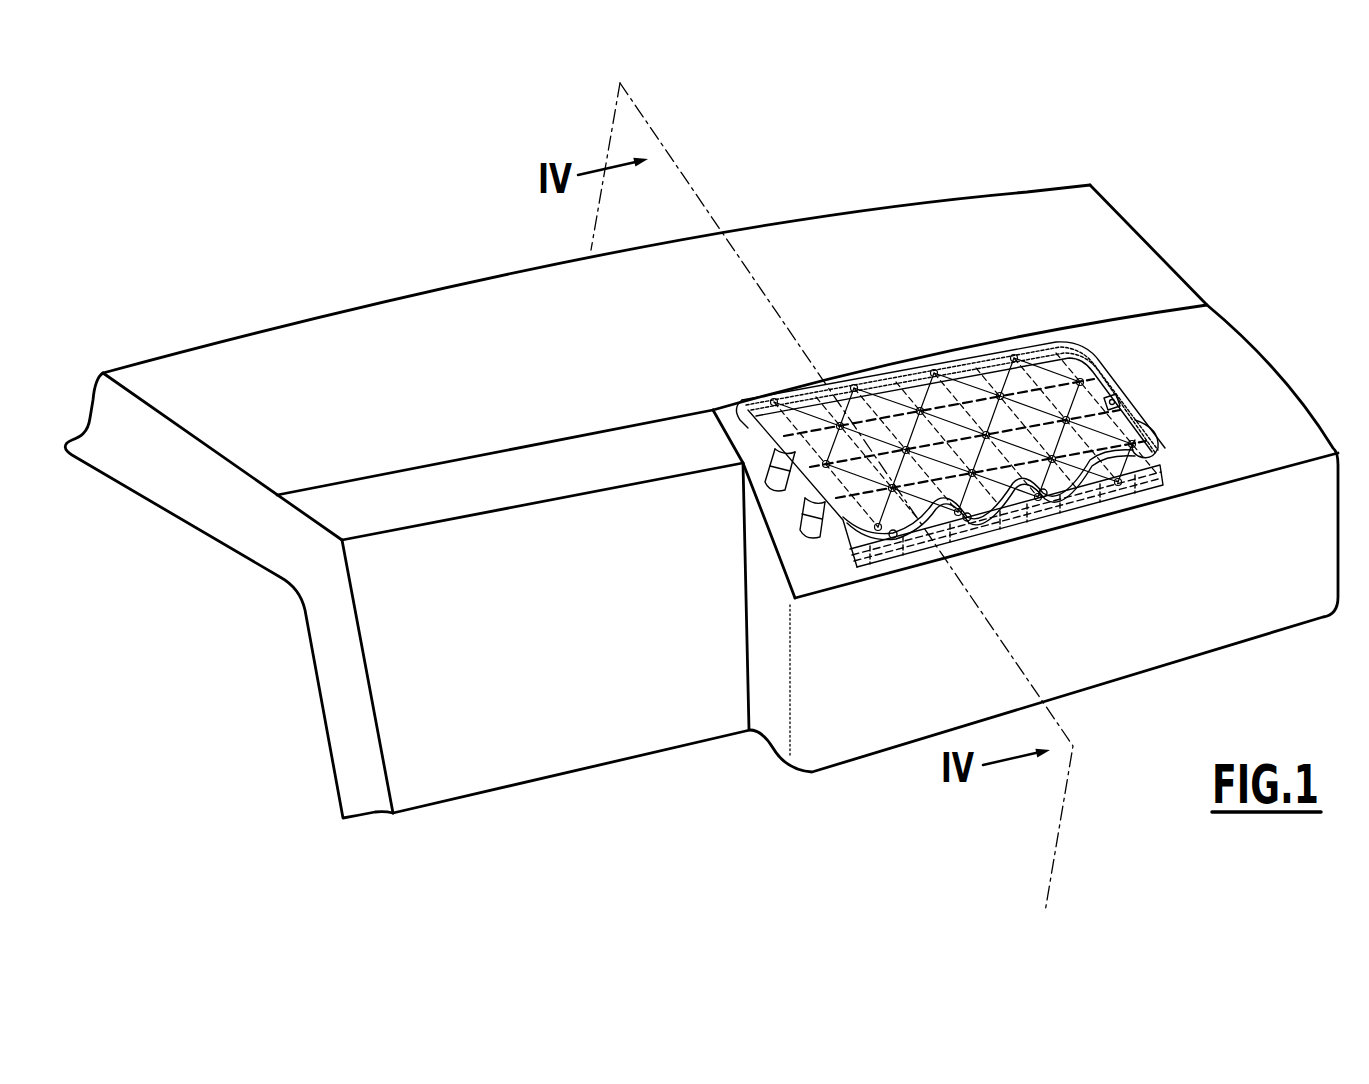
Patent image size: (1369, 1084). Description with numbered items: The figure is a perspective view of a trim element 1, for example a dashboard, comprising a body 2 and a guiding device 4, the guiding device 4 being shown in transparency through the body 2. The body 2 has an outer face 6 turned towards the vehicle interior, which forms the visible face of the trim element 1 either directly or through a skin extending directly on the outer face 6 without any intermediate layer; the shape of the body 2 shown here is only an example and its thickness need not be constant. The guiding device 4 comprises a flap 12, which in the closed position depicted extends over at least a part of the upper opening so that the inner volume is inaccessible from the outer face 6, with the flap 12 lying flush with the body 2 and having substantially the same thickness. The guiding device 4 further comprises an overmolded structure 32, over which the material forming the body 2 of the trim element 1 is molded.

The trim element 1 is at (1160, 176).
The body 2 is at (1130, 265).
The guiding device 4 is at (1101, 499).
The outer face 6 is at (380, 510).
The flap 12 is at (897, 360).
The overmolded structure 32 is at (1120, 397).